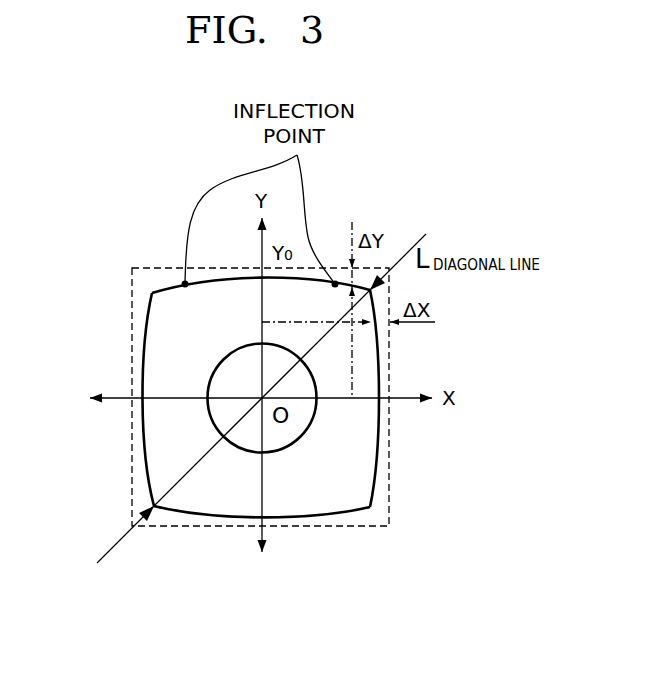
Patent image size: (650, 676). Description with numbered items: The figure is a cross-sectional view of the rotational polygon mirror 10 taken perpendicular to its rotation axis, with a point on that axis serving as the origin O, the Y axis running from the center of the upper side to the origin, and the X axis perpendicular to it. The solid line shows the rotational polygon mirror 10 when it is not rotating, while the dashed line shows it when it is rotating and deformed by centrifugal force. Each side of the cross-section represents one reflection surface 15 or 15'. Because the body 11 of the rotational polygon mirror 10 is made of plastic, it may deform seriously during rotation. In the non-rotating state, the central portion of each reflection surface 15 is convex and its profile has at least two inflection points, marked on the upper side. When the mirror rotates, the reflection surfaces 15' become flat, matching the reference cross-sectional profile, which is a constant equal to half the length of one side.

The rotational polygon mirror 10 is at (242, 351).
The body 11 is at (163, 473).
The reflection surface 15 is at (413, 398).
The reflection surface 15' is at (260, 426).